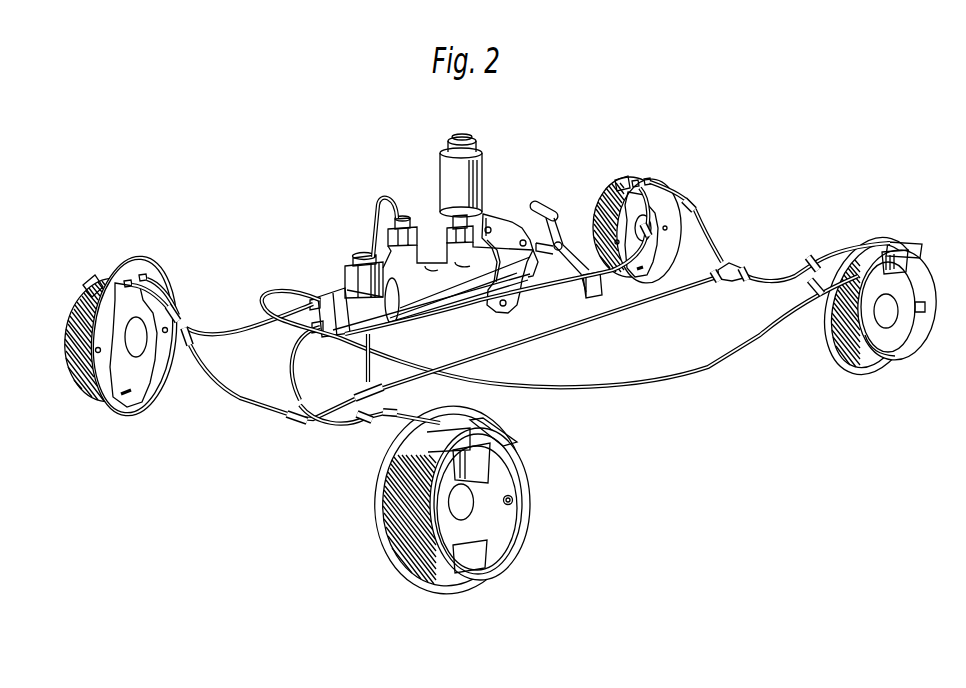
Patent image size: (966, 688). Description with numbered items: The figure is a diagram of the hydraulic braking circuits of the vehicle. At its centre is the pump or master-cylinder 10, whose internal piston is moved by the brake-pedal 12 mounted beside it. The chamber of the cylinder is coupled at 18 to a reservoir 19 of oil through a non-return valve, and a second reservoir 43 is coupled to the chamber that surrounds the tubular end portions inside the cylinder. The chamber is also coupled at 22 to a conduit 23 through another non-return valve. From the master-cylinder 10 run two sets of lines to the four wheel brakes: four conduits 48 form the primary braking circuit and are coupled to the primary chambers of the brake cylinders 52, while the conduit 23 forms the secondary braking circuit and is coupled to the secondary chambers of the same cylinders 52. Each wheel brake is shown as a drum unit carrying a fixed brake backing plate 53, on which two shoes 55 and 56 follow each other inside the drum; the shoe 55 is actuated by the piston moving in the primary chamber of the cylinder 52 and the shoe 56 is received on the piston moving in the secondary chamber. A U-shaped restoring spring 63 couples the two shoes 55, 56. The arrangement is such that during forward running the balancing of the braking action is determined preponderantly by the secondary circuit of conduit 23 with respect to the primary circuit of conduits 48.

The master-cylinder 10 is at (417, 312).
The brake-pedal 12 is at (604, 291).
The coupling to reservoir 18 is at (465, 220).
The reservoir of oil 19 is at (482, 163).
The coupling to conduit 22 is at (412, 223).
The conduit 23 is at (380, 197).
The reservoir 43 is at (345, 267).
The conduits 48 is at (538, 293).
The brake cylinder 52 is at (102, 275).
The brake backing plate 53 is at (477, 512).
The shoe 55 is at (402, 533).
The shoe 56 is at (528, 466).
The U-shaped restoring spring 63 is at (493, 533).